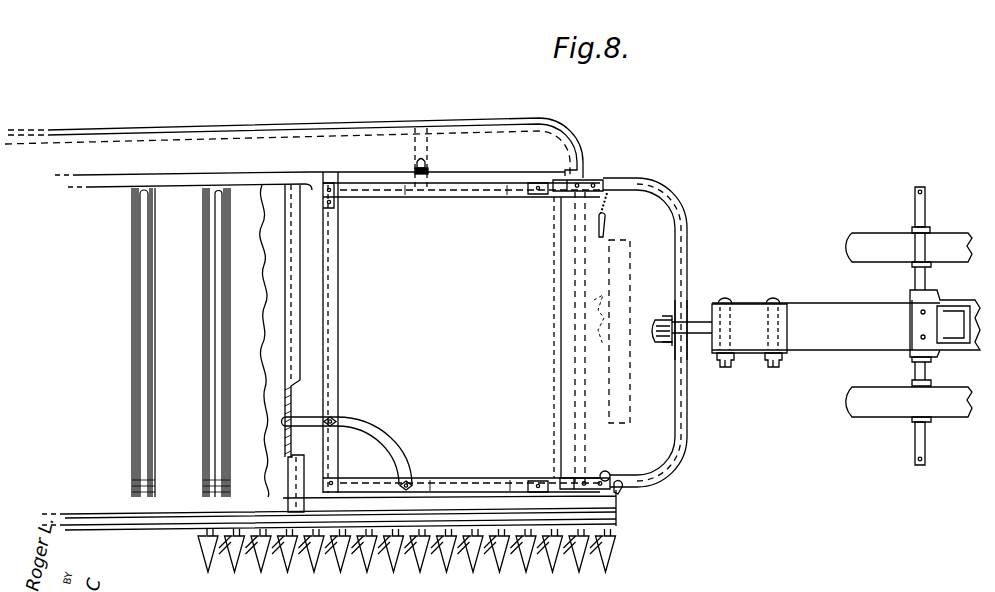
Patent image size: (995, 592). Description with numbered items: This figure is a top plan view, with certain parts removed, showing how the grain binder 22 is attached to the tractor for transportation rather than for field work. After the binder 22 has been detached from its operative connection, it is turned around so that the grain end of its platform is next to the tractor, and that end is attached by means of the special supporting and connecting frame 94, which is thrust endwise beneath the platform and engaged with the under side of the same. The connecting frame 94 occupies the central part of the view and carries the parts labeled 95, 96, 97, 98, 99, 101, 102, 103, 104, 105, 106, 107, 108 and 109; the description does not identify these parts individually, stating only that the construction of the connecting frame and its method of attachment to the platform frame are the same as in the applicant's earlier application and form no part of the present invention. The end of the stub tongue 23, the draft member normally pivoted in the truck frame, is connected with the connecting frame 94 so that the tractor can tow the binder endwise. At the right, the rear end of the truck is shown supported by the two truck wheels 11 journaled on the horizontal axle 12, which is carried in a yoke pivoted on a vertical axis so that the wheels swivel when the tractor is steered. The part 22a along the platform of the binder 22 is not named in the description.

The truck wheels 11 is at (873, 242).
The horizontal axle 12 is at (925, 208).
The grain binder 22 is at (200, 341).
The spikes 22a is at (452, 556).
The stub tongue 23 is at (849, 330).
The supporting and connecting frame 94 is at (663, 342).
The frame top bar 95 is at (476, 197).
The frame bottom bar 96 is at (461, 478).
The frame vertical member 97 is at (689, 397).
The frame left post 98 is at (337, 332).
The bracket 99 is at (311, 424).
The post 101 is at (288, 401).
The plate 102 is at (541, 196).
The frame right post 103 is at (556, 352).
The hinge plate 104 is at (592, 182).
The hinge pin 105 is at (606, 220).
The latch 106 is at (425, 170).
The pivot pin head 107 is at (660, 318).
The nut 108 is at (664, 345).
The clamp bracket 109 is at (692, 323).